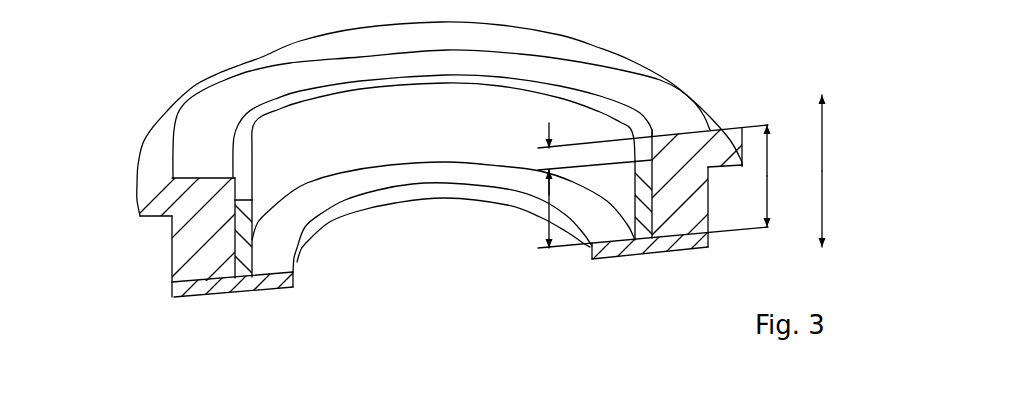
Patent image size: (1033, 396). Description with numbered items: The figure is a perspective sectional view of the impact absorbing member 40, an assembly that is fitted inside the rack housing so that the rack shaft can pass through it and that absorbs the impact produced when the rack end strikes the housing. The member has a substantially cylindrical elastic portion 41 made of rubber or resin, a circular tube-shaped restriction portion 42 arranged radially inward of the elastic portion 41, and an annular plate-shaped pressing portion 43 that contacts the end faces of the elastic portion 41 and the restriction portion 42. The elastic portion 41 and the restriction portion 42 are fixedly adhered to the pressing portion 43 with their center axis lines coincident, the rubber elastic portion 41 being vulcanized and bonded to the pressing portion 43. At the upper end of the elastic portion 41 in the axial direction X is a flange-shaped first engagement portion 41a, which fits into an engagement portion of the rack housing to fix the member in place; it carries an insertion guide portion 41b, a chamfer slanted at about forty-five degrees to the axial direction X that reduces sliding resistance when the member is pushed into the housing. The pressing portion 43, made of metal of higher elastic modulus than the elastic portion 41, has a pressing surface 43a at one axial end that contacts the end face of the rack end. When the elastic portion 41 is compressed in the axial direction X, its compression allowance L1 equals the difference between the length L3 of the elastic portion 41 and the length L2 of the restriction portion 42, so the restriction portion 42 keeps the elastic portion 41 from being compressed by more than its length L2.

The impact absorbing member 40 is at (119, 80).
The elastic portion 41 is at (171, 254).
The first engagement portion 41a is at (156, 222).
The insertion guide portion 41b is at (150, 188).
The restriction portion 42 is at (330, 121).
The pressing portion 43 is at (279, 258).
The pressing surface 43a is at (648, 254).
The compression allowance L1 is at (549, 157).
The length of the restriction portion L2 is at (549, 209).
The length of the elastic portion L3 is at (783, 176).
The axial direction X is at (838, 171).